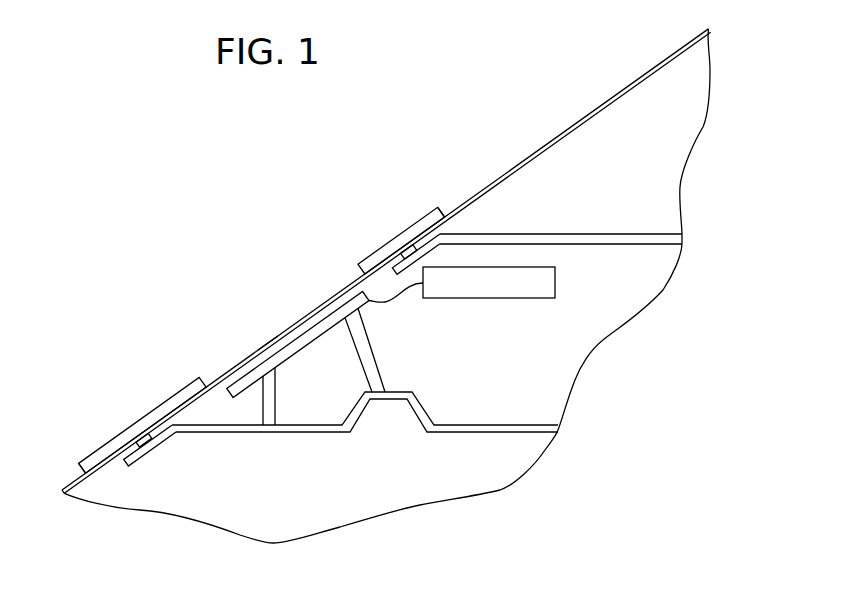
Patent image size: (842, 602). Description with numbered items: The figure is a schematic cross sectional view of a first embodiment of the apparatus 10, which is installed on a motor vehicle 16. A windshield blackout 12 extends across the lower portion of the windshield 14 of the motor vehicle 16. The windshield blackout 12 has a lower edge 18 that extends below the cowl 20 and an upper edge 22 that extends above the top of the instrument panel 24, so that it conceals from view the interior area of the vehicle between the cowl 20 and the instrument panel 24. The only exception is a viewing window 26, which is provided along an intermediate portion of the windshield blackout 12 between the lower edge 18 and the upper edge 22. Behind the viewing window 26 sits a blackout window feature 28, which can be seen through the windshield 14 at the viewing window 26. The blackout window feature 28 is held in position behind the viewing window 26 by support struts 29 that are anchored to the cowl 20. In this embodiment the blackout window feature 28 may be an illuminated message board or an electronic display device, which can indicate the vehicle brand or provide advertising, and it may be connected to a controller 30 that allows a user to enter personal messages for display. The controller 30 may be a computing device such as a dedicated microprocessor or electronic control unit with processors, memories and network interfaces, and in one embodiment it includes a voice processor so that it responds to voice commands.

The apparatus 10 is at (172, 235).
The windshield blackout 12 is at (147, 415).
The windshield 14 is at (535, 152).
The motor vehicle 16 is at (501, 502).
The lower edge 18 is at (80, 467).
The cowl 20 is at (228, 433).
The upper edge 22 is at (440, 213).
The instrument panel 24 is at (612, 234).
The viewing window 26 is at (268, 333).
The blackout window feature 28 is at (300, 348).
The support struts 29 is at (373, 358).
The controller 30 is at (555, 292).